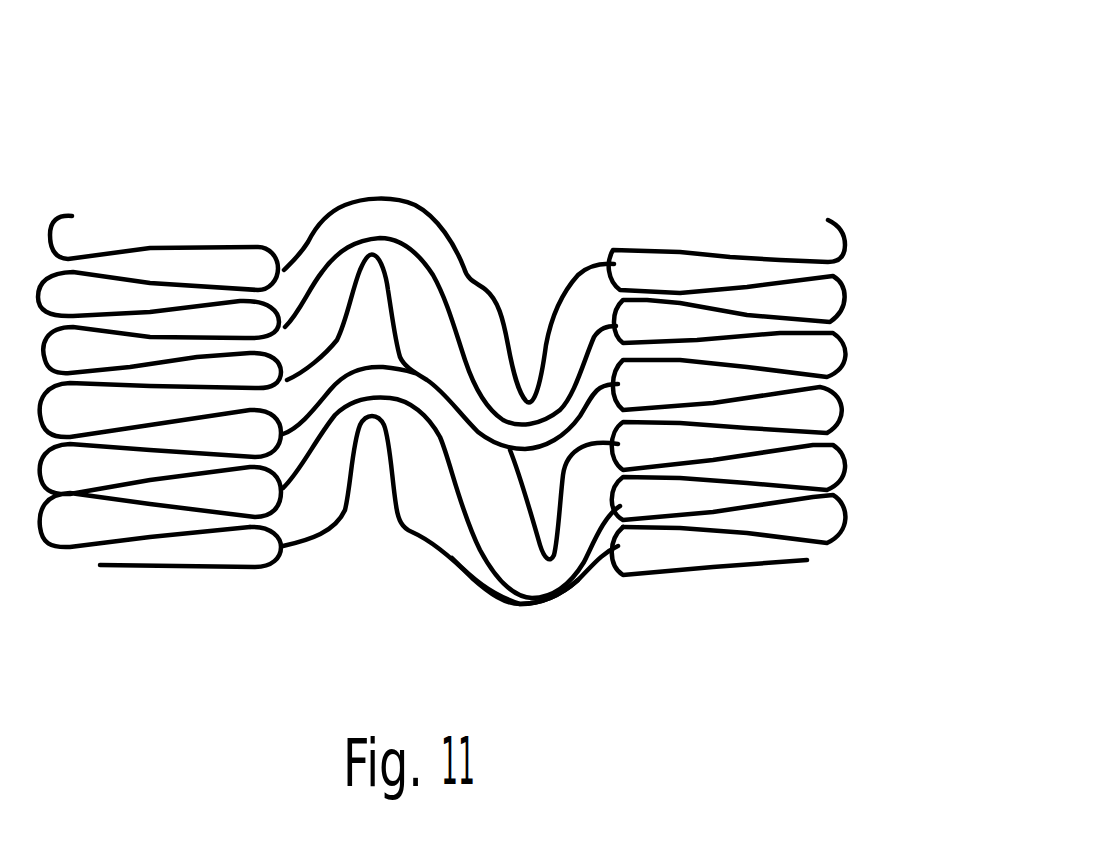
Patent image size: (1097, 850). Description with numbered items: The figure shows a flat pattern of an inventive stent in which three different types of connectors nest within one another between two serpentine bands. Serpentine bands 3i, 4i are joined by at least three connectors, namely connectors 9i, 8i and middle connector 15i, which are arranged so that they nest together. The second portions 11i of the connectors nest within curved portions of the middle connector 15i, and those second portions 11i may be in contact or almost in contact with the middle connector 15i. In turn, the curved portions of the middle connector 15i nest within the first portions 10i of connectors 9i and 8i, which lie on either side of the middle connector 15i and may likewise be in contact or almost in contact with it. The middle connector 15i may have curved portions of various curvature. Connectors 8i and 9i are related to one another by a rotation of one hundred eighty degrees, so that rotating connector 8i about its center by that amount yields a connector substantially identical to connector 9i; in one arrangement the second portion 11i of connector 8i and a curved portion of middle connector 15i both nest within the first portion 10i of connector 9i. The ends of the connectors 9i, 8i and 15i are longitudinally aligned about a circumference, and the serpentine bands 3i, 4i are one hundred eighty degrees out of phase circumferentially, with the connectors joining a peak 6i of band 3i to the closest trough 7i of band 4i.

The serpentine band 3i is at (167, 607).
The serpentine band 4i is at (741, 590).
The peak 6i is at (280, 557).
The trough 7i is at (600, 572).
The connector 8i is at (391, 311).
The connector 9i is at (357, 221).
The first portion 10i is at (523, 610).
The second portion 11i is at (353, 472).
The middle connector 15i is at (418, 237).